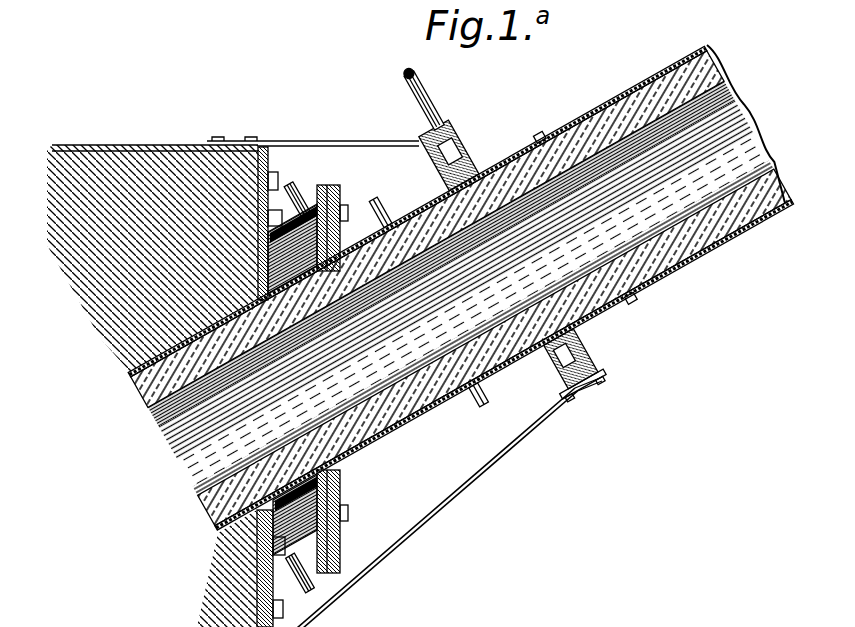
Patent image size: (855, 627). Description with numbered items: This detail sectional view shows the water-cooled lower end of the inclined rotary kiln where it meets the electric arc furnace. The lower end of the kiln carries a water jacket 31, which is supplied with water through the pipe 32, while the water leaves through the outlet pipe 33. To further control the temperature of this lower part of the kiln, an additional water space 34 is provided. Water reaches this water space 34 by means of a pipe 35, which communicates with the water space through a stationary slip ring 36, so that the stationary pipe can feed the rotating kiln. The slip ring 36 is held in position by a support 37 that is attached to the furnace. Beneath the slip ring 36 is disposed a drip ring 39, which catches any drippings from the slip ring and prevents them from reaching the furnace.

The water jacket 31 is at (301, 214).
The pipe 32 is at (293, 183).
The outlet pipe 33 is at (312, 590).
The additional water space 34 is at (407, 232).
The pipe 35 is at (426, 92).
The stationary slip ring 36 is at (584, 364).
The support 37 is at (471, 478).
The drip ring 39 is at (488, 395).